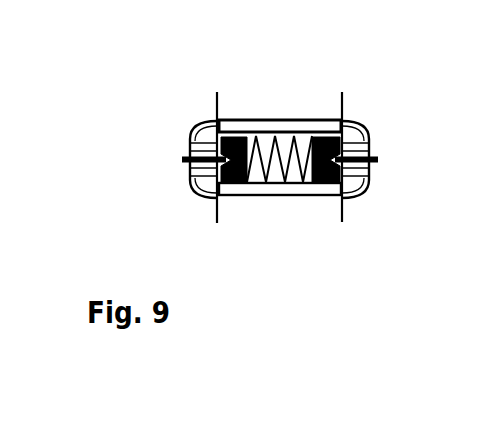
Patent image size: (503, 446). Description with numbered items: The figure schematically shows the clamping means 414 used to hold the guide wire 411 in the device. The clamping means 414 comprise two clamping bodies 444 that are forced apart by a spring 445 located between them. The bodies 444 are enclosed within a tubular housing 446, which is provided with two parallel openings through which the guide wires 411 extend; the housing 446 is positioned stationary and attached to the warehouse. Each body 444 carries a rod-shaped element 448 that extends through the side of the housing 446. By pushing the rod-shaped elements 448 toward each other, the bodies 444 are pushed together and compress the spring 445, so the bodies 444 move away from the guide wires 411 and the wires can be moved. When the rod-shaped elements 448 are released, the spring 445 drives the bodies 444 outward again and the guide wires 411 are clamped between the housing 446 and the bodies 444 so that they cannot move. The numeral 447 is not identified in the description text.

The clamping means 414 is at (160, 111).
The guide wire 411 is at (342, 101).
The clamping body 444 is at (241, 120).
The tubular housing 446 is at (309, 120).
The spring 445 is at (285, 195).
The flange 447 is at (214, 111).
The rod-shaped element 448 is at (182, 160).